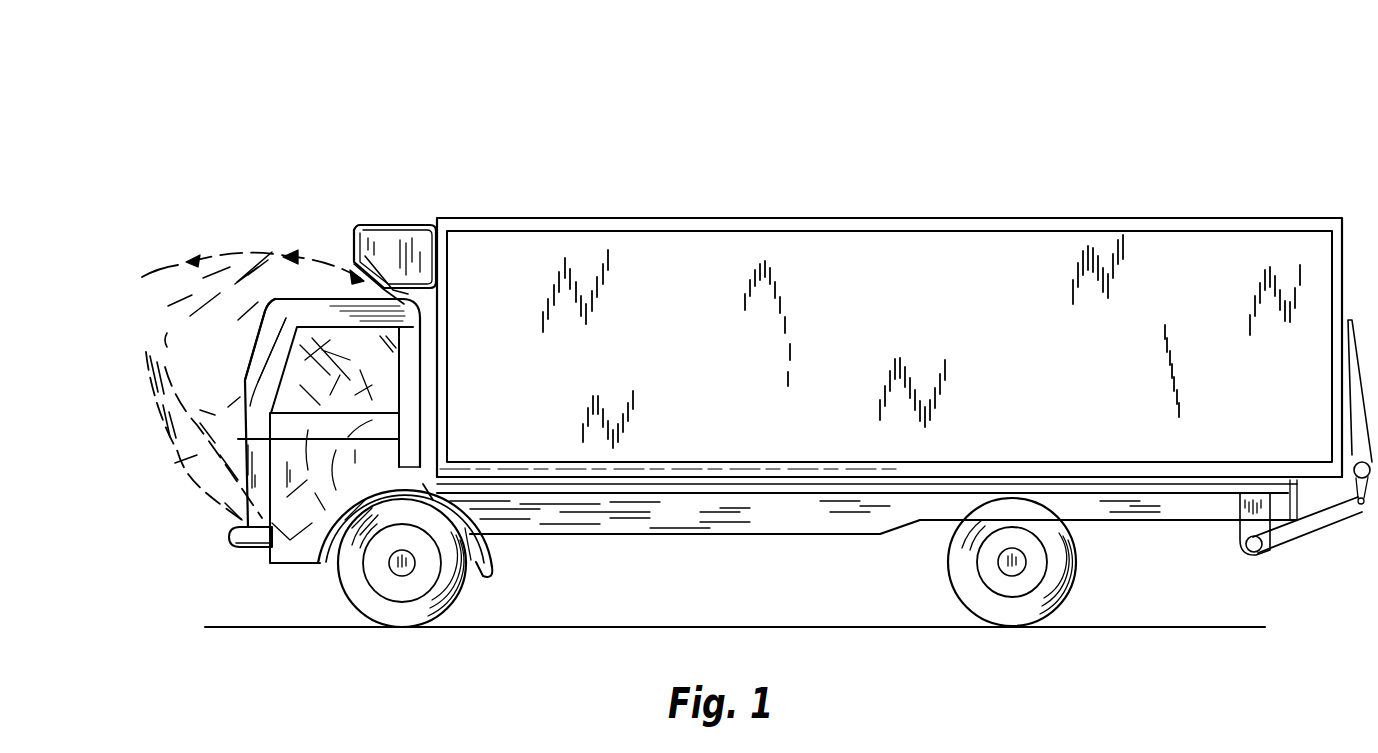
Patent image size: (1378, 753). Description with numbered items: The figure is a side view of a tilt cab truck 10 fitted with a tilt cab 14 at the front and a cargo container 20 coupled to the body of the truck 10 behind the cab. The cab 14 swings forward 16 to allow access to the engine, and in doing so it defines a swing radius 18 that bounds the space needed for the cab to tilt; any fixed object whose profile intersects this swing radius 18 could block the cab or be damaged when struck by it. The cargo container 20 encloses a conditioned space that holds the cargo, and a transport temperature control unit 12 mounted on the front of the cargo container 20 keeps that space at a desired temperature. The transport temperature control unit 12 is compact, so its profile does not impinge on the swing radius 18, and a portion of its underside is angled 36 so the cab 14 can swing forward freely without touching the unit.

The truck 10 is at (909, 66).
The transport temperature control unit 12 is at (422, 222).
The tilt cab 14 is at (268, 323).
The swinging forward 16 is at (148, 337).
The swing radius 18 is at (268, 256).
The cargo container 20 is at (676, 218).
The angled portion of underside 36 is at (370, 273).